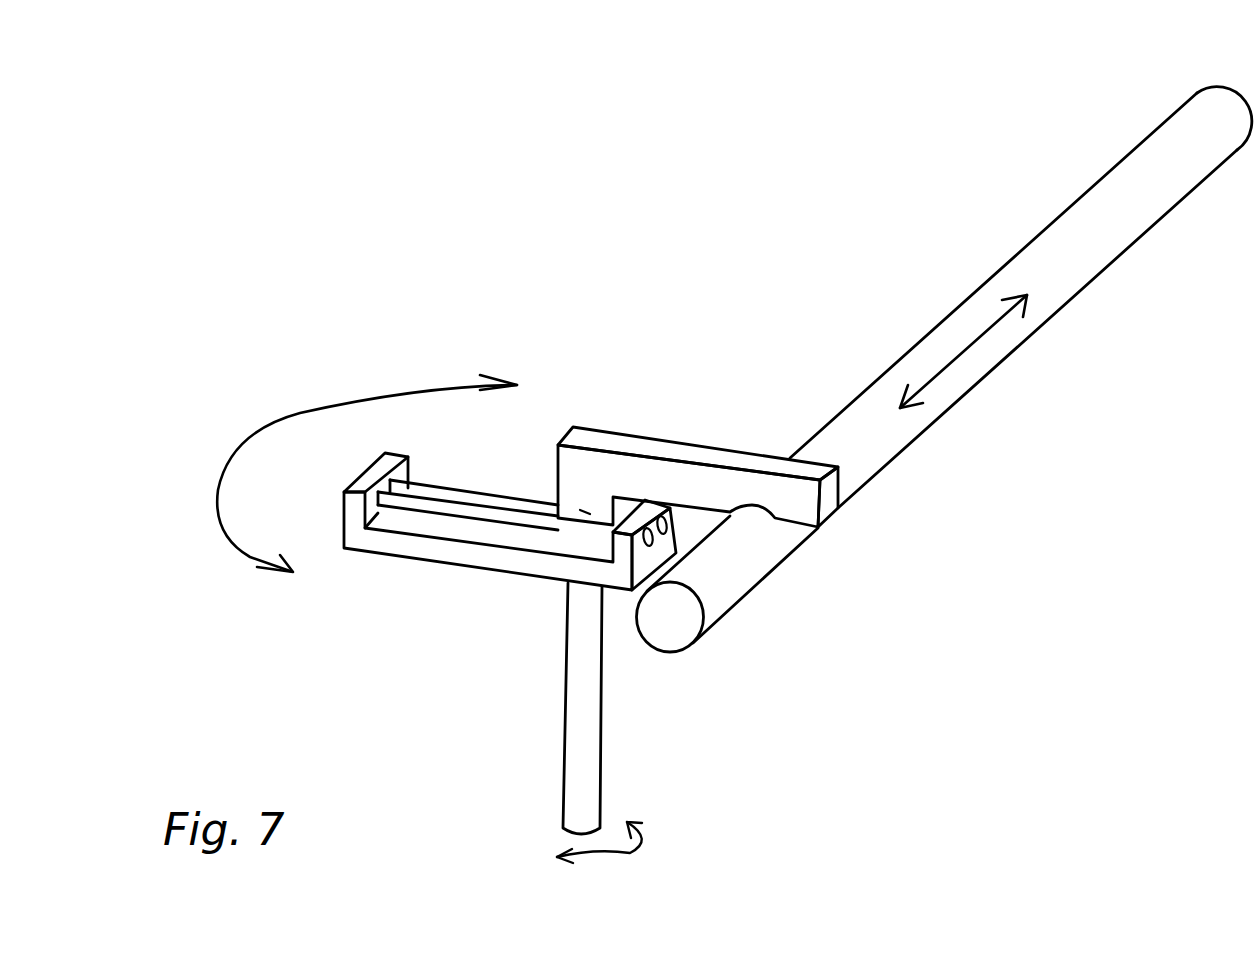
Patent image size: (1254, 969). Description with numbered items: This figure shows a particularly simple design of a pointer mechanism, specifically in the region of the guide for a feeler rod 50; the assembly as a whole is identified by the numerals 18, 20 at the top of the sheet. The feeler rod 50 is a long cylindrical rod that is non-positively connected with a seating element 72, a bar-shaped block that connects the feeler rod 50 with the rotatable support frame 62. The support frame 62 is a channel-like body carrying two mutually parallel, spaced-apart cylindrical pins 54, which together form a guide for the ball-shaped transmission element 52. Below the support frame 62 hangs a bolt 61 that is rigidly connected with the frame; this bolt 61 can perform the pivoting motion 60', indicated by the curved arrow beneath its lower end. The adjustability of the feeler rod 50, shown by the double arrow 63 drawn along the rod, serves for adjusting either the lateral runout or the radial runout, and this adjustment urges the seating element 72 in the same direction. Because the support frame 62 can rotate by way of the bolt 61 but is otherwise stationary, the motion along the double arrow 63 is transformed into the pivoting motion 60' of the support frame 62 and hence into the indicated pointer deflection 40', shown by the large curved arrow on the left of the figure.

The holding device 18 is at (734, 463).
The mounting assembly 20 is at (611, 140).
The pointer deflection 40' is at (367, 437).
The feeler rod 50 is at (1077, 289).
The ball-shaped transmission element 52 is at (585, 512).
The cylindrical pins 54 is at (463, 492).
The pivoting motion 60' is at (643, 862).
The bolt 61 is at (595, 716).
The support frame 62 is at (462, 555).
The double arrow 63 is at (965, 357).
The seating element 72 is at (672, 456).